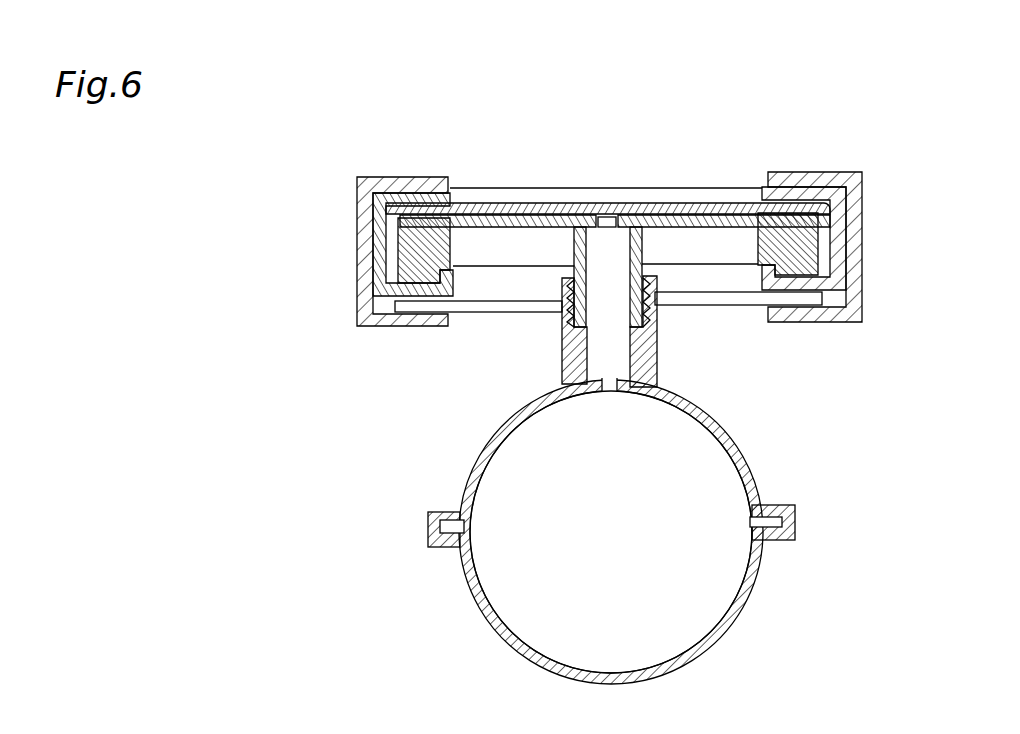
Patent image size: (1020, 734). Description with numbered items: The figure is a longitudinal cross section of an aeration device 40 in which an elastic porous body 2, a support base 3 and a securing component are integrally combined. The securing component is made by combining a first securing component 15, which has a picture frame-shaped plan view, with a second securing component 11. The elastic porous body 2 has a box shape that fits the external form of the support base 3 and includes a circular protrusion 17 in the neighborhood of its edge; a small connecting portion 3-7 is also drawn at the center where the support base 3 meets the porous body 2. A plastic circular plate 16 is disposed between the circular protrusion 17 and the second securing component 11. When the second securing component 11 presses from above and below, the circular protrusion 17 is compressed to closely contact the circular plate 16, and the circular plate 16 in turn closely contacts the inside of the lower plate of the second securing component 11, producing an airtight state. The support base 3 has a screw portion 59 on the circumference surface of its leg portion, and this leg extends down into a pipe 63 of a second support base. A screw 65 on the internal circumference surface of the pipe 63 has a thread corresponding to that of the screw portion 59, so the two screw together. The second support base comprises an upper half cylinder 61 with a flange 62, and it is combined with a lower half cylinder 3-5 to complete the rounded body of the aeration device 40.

The second securing component 11 is at (383, 178).
The first securing component 15 is at (420, 178).
The elastic porous body 2 is at (687, 203).
The support base 3 is at (796, 242).
The connection part 3-7 is at (606, 217).
The aeration device 40 is at (802, 151).
The circular plate 16 is at (410, 327).
The circular protrusion 17 is at (800, 299).
The pipe 63 is at (565, 370).
The screw portion 59 is at (562, 315).
The screw 65 is at (657, 349).
The upper half cylinder 61 is at (753, 460).
The lower half cylinder 3-5 is at (730, 622).
The flange 62 is at (433, 510).